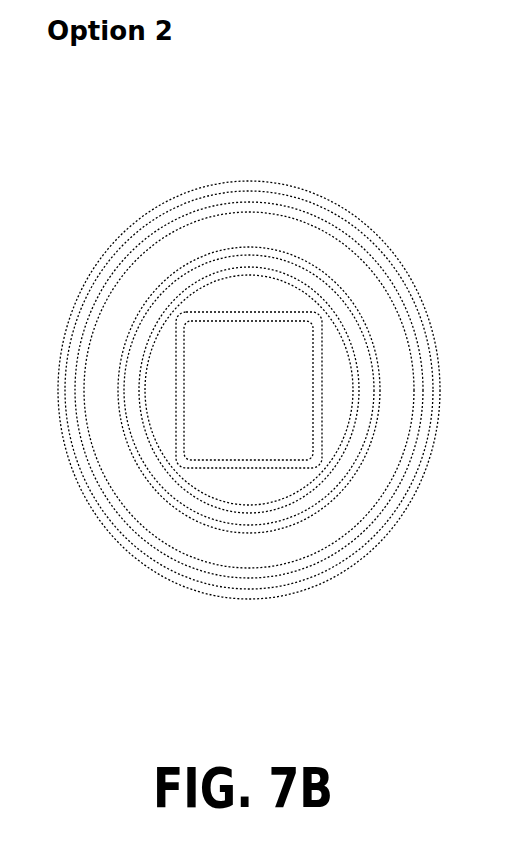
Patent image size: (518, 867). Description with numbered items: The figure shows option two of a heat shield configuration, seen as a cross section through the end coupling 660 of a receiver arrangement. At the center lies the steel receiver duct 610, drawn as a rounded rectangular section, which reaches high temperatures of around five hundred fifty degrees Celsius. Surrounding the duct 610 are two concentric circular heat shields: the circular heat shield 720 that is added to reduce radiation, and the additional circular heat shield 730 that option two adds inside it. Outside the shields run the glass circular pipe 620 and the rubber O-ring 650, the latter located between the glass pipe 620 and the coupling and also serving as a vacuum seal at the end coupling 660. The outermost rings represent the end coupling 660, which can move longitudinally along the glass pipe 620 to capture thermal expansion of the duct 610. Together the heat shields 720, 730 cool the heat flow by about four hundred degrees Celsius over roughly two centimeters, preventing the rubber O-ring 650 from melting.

The steel receiver duct 610 is at (179, 305).
The glass circular pipe 620 is at (296, 218).
The rubber O-ring 650 is at (334, 227).
The end coupling 660 is at (375, 234).
The circular heat shield 720 is at (226, 248).
The circular heat shield 730 is at (196, 280).